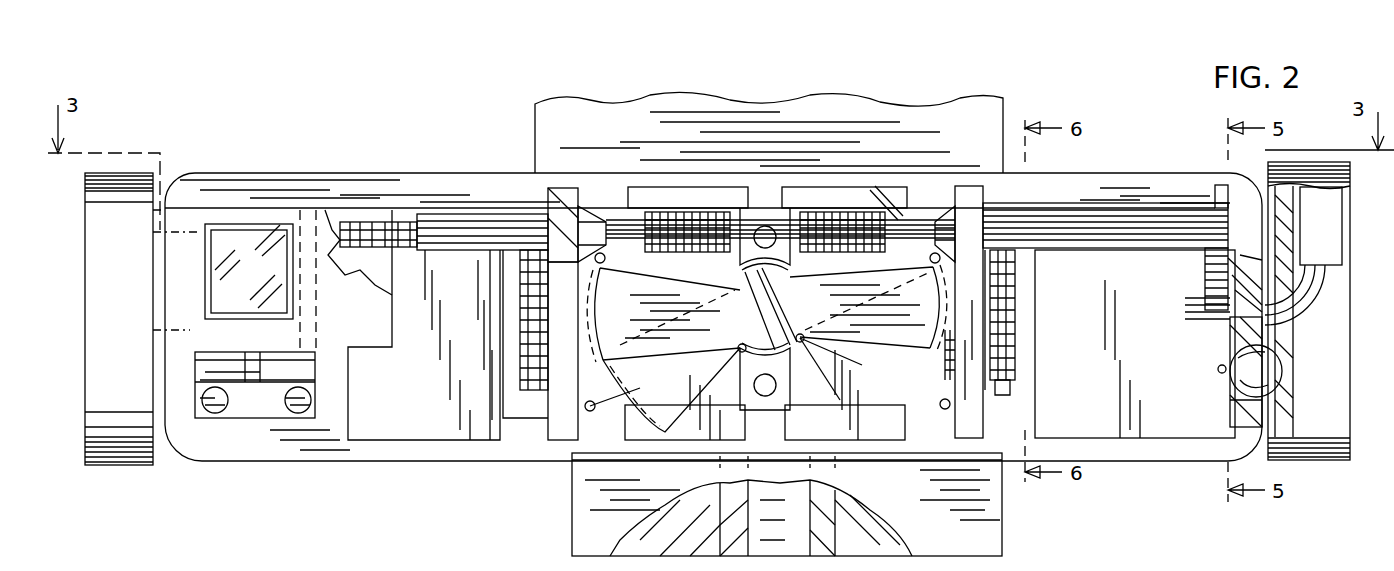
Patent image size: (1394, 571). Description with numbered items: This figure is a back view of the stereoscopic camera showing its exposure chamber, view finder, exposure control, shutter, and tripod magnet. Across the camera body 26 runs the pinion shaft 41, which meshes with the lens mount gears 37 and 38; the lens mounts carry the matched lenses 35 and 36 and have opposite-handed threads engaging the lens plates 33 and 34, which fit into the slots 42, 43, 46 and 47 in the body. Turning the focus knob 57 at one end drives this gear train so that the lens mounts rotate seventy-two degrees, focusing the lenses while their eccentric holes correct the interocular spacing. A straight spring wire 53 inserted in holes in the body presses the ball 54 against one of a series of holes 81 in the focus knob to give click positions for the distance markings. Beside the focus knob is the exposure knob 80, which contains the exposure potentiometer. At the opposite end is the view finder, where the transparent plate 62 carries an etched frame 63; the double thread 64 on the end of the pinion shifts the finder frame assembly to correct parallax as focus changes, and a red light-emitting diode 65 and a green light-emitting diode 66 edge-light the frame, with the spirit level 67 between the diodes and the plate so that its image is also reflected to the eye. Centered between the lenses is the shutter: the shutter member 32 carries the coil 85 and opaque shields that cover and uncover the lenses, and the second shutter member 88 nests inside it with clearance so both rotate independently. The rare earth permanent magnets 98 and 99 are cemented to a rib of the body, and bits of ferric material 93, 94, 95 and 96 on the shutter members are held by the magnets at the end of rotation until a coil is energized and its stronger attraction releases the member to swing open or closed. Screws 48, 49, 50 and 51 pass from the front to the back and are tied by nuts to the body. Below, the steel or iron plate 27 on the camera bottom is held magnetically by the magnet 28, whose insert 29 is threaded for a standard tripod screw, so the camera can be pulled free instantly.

The camera body 26 is at (1168, 175).
The steel or iron plate 27 is at (910, 445).
The magnet 28 is at (590, 544).
The insert 29 is at (820, 545).
The shutter member 32 is at (890, 352).
The lens plate 33 is at (960, 195).
The lens plate 34 is at (560, 440).
The lens 35 is at (1015, 330).
The lens 36 is at (510, 290).
The lens mount 37 is at (1010, 297).
The lens mount 38 is at (535, 355).
The pinion shaft 41 is at (1125, 225).
The slot 42 is at (955, 435).
The slot 43 is at (578, 440).
The slot 46 is at (975, 186).
The slot 47 is at (565, 190).
The screw 48 is at (932, 254).
The screw 49 is at (605, 232).
The screw 50 is at (640, 372).
The screw 51 is at (940, 402).
The straight spring wire 53 is at (1218, 370).
The ball 54 is at (1262, 372).
The focus knob 57 is at (1335, 312).
The transparent plate 62 is at (198, 210).
The frame 63 is at (263, 225).
The thread 64 is at (408, 232).
The red light-emitting diode 65 is at (215, 405).
The green light-emitting diode 66 is at (318, 404).
The spirit level 67 is at (252, 372).
The exposure knob 80 is at (100, 210).
The hole 81 is at (1288, 250).
The coil 85 is at (820, 369).
The second shutter member 88 is at (670, 432).
The bit of ferric material 93 is at (795, 268).
The bit of ferric material 94 is at (727, 288).
The bit of ferric material 95 is at (742, 344).
The bit of ferric material 96 is at (860, 368).
The rare earth permanent magnet 98 is at (765, 208).
The rare earth permanent magnet 99 is at (790, 365).